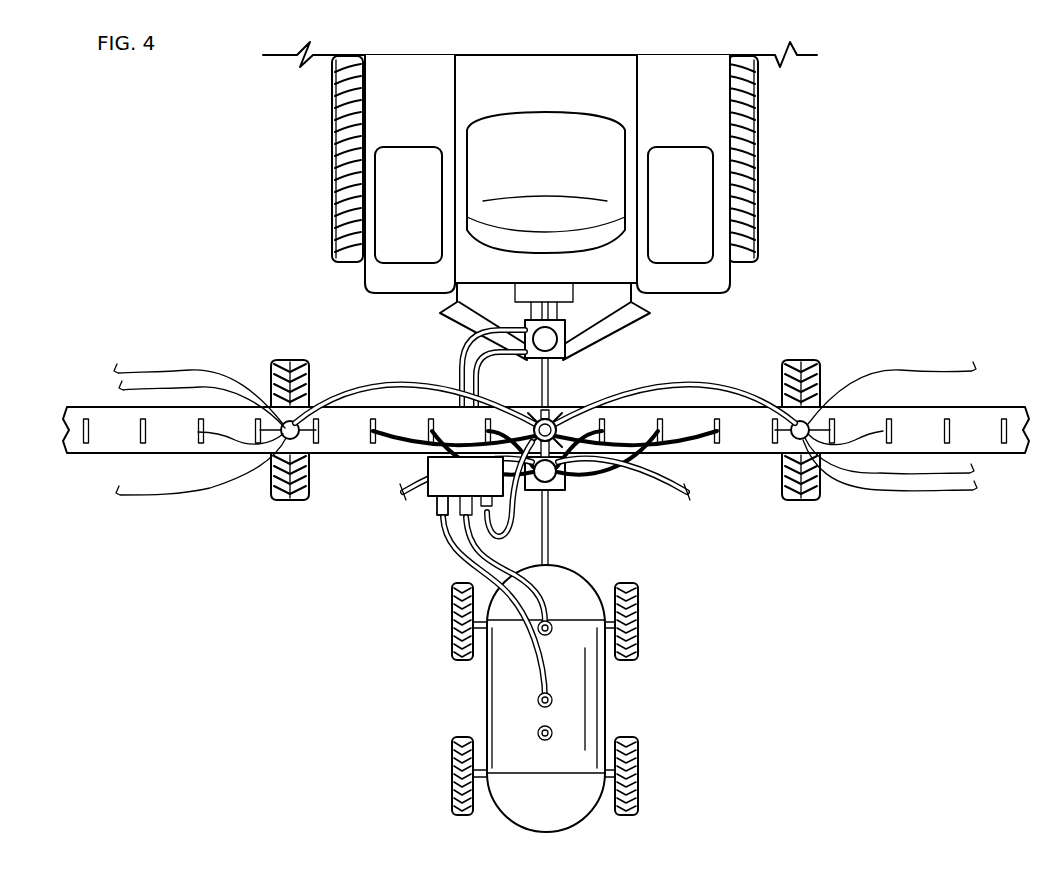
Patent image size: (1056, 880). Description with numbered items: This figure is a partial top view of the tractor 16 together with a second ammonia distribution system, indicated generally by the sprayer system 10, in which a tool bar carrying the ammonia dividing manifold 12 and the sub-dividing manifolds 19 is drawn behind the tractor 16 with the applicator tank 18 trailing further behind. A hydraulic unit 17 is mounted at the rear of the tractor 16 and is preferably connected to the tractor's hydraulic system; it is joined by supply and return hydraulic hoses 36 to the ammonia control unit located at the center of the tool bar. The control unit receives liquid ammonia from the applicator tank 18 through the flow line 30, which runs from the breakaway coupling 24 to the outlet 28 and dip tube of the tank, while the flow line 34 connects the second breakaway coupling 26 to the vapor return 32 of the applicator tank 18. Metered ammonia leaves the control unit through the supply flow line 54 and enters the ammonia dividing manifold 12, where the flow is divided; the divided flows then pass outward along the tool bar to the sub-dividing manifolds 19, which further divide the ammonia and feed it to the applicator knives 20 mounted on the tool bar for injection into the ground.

The agricultural sprayer system 10 is at (865, 260).
The ammonia dividing manifold 12 is at (534, 415).
The tractor 16 is at (362, 276).
The hydraulic unit 17 is at (568, 328).
The applicator tank 18 is at (605, 682).
The sub-dividing manifold 19 is at (298, 440).
The applicator knives 20 is at (198, 435).
The breakaway coupling 24 is at (454, 519).
The breakaway coupling 26 is at (437, 512).
The outlet 28 is at (553, 622).
The flow line 30 is at (555, 570).
The vapor return 32 is at (537, 701).
The flow line 34 is at (525, 647).
The supply and return hydraulic hoses 36 is at (478, 353).
The supply flow line 54 is at (512, 498).